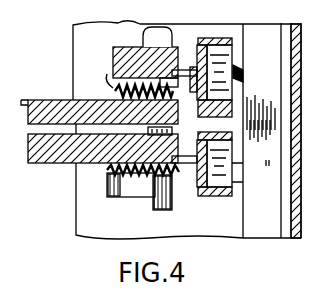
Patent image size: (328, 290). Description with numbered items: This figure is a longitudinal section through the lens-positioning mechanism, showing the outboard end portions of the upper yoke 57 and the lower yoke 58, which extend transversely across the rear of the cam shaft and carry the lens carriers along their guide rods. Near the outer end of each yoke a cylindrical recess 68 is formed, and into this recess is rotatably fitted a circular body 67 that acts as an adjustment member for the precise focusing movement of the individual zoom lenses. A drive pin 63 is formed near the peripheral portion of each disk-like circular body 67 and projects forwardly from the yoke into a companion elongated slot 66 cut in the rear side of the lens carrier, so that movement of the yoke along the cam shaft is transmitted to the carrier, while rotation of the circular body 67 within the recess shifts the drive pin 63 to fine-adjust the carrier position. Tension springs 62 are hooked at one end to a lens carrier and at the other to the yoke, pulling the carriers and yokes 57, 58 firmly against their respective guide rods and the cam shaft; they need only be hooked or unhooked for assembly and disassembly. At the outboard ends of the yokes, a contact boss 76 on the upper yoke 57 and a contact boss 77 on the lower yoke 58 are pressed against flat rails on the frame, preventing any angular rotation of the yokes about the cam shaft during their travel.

The upper yoke 57 is at (232, 48).
The lower yoke 58 is at (237, 185).
The tension spring 62 is at (112, 82).
The drive pin 63 is at (186, 66).
The elongated slot 66 is at (150, 80).
The circular body 67 is at (226, 62).
The cylindrical recess 68 is at (224, 44).
The contact boss 76 is at (238, 78).
The contact boss 77 is at (236, 170).